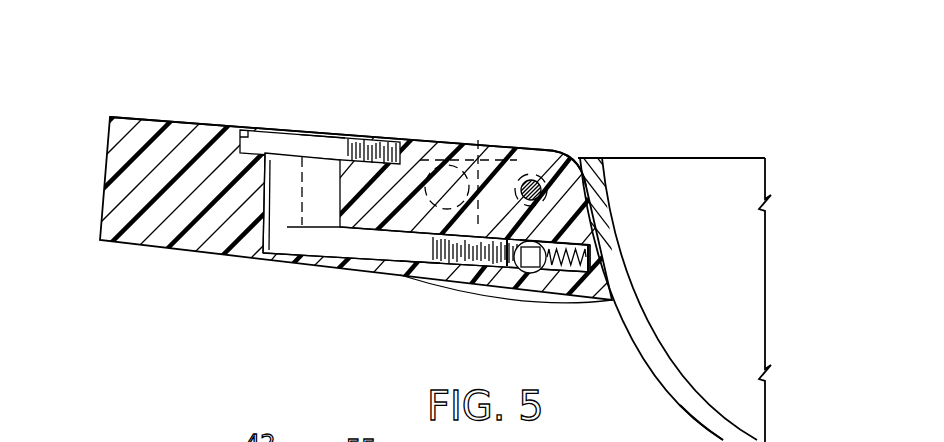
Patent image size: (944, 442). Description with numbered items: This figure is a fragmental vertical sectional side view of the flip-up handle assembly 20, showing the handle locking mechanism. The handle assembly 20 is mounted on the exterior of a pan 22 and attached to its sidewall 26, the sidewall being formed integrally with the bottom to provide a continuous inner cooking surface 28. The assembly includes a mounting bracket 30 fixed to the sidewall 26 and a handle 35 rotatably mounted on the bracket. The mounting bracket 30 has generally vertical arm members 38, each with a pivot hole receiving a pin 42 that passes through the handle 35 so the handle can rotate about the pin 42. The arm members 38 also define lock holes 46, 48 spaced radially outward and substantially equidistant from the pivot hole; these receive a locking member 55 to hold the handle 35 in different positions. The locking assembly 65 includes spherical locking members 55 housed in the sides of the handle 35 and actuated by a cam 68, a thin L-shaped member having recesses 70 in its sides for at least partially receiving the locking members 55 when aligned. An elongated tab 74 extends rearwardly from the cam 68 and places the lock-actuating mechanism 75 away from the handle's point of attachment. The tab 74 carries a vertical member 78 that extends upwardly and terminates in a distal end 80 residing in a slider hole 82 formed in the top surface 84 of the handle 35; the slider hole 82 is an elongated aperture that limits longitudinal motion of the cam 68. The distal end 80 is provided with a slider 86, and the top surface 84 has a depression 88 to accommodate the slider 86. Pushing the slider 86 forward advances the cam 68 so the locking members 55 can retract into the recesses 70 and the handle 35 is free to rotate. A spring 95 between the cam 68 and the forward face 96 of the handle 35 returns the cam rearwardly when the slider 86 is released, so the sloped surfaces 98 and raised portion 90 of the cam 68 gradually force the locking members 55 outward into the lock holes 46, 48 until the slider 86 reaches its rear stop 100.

The handle assembly 20 is at (193, 72).
The pan 22 is at (691, 152).
The sidewall 26 is at (622, 323).
The inner cooking surface 28 is at (752, 428).
The mounting bracket 30 is at (516, 303).
The handle 35 is at (150, 118).
The arm member 38 is at (570, 158).
The pin 42 is at (531, 180).
The lock hole 46 is at (448, 165).
The lock hole 48 is at (478, 140).
The locking member 55 is at (550, 245).
The locking assembly 65 is at (425, 270).
The cam 68 is at (452, 272).
The recess 70 is at (490, 258).
The tab 74 is at (375, 252).
The lock-actuating mechanism 75 is at (338, 133).
The vertical member 78 is at (282, 197).
The distal end 80 is at (294, 163).
The slider hole 82 is at (320, 210).
The top surface 84 is at (416, 142).
The slider 86 is at (270, 133).
The depression 88 is at (368, 137).
The raised portion 90 is at (528, 272).
The spring 95 is at (590, 257).
The forward face 96 is at (597, 267).
The sloped surface 98 is at (507, 253).
The rear stop 100 is at (245, 128).